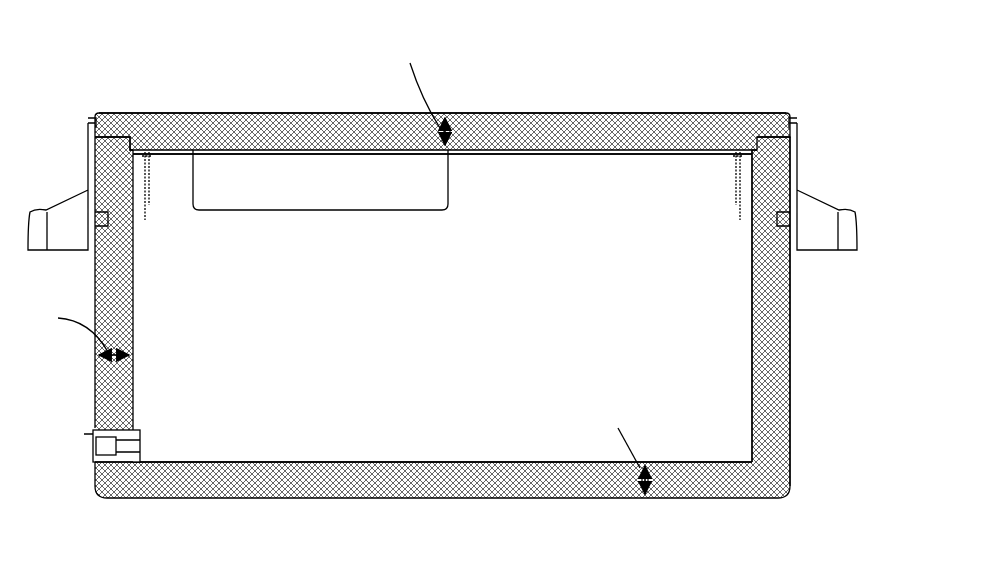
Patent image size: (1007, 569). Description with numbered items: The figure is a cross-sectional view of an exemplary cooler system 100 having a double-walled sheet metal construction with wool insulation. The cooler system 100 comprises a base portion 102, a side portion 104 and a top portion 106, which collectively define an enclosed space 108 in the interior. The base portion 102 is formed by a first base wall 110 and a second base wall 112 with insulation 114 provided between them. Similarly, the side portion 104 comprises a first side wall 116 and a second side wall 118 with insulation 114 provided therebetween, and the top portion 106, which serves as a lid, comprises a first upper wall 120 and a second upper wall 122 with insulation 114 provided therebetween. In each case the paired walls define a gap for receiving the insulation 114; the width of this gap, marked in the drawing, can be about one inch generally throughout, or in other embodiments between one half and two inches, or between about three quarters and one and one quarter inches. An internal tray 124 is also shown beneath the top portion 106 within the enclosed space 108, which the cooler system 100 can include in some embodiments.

The cooler system 100 is at (82, 86).
The base portion 102 is at (469, 319).
The side portion 104 is at (797, 362).
The top portion 106 is at (442, 306).
The enclosed space 108 is at (459, 326).
The first base wall 110 is at (377, 500).
The base wall 112 is at (368, 462).
The insulation 114 is at (598, 130).
The first side wall 116 is at (792, 325).
The side wall 118 is at (752, 320).
The first upper wall 120 is at (688, 113).
The upper wall 122 is at (642, 152).
The internal tray 124 is at (305, 212).